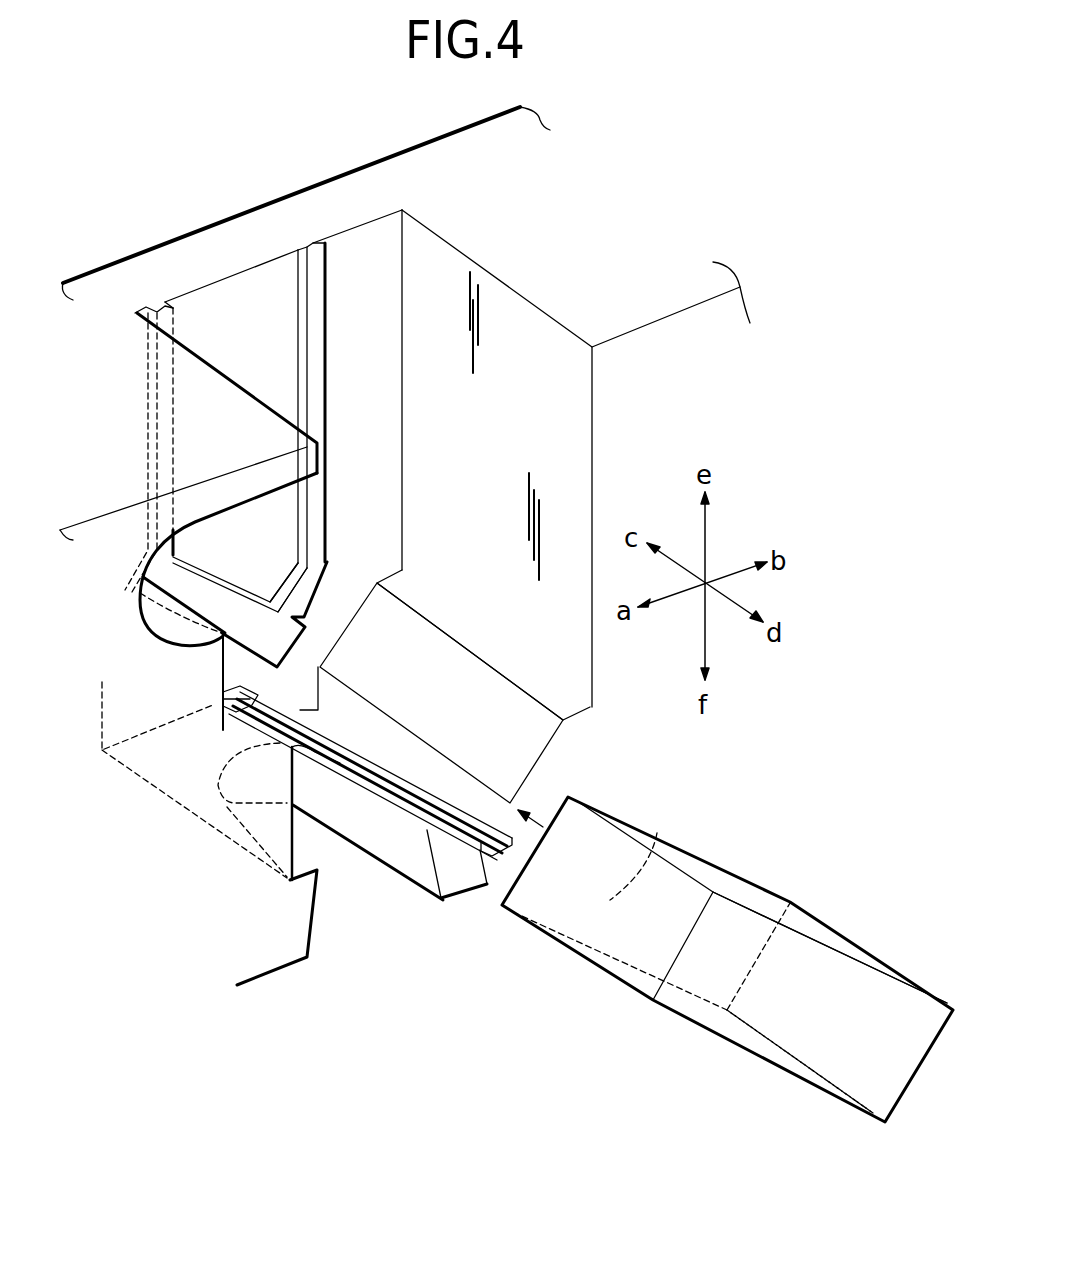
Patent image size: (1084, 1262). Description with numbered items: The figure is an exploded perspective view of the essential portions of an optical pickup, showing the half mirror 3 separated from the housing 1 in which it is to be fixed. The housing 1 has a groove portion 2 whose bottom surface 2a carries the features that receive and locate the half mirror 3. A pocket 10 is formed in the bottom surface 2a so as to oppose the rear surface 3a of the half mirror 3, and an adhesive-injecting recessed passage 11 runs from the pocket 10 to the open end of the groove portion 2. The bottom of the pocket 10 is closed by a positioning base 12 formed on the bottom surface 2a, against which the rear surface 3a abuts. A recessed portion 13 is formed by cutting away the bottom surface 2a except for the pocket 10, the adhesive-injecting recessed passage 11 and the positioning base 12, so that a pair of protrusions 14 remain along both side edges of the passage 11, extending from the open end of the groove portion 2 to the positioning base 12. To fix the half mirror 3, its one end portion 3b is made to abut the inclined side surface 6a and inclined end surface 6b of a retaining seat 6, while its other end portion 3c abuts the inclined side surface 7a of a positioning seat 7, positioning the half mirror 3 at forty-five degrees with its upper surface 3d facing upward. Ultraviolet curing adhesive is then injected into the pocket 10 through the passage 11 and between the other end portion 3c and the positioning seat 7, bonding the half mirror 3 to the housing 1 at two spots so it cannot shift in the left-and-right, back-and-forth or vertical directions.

The housing 1 is at (470, 158).
The groove portion 2 is at (367, 928).
The bottom surface of the groove portion 2a is at (355, 218).
The half mirror 3 is at (727, 959).
The rear surface of the half mirror 3a is at (667, 832).
The one end portion of the half mirror 3b is at (800, 1060).
The other end portion of the half mirror 3c is at (565, 950).
The upper surface of the half mirror 3d is at (770, 903).
The retaining seat 6 is at (460, 858).
The inclined side surface of the retaining seat 6a is at (423, 798).
The inclined end surface of the retaining seat 6b is at (450, 688).
The positioning seat 7 is at (260, 758).
The inclined side surface of the positioning seat 7a is at (240, 727).
The pocket 10 is at (270, 572).
The adhesive-injecting recessed passage 11 is at (232, 303).
The positioning base 12 is at (221, 600).
The recessed portion 13 is at (402, 400).
The protrusions 14 is at (318, 343).